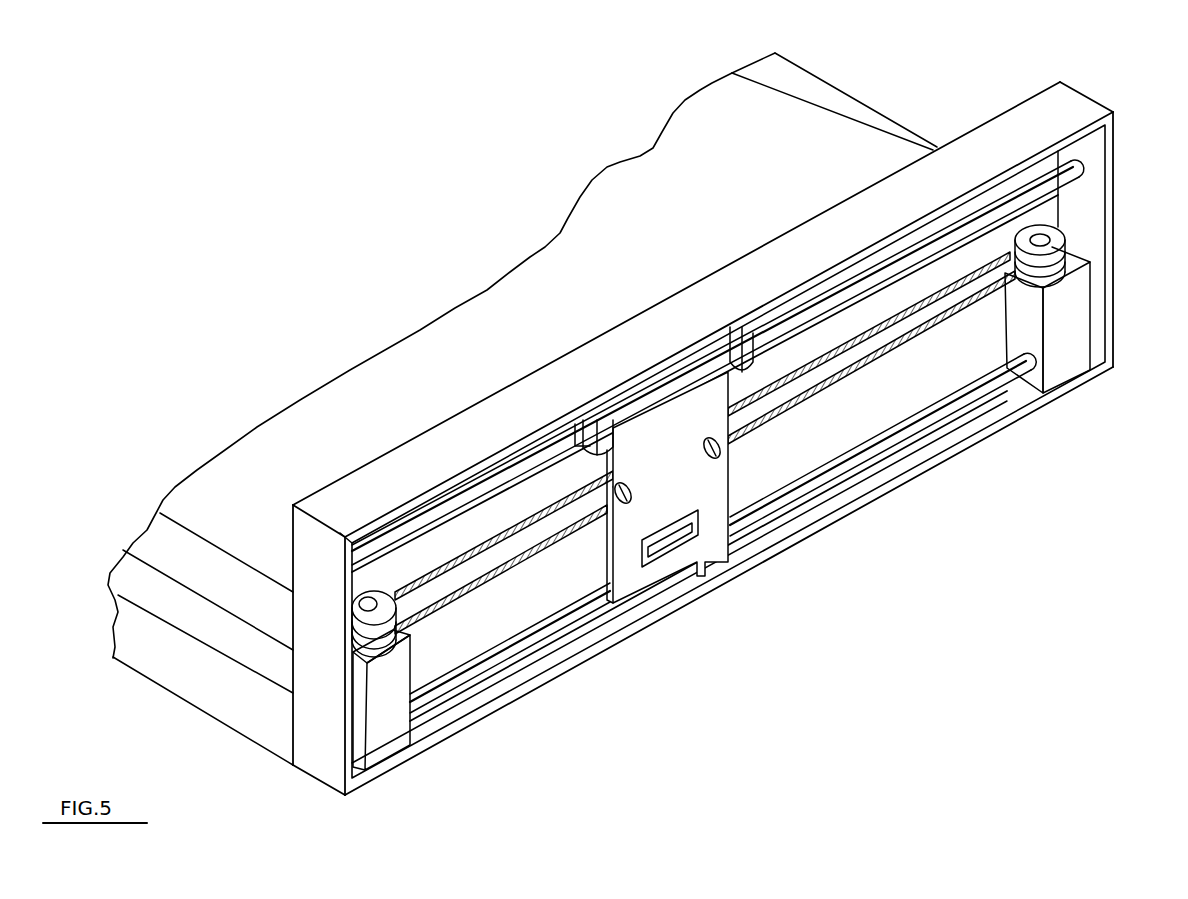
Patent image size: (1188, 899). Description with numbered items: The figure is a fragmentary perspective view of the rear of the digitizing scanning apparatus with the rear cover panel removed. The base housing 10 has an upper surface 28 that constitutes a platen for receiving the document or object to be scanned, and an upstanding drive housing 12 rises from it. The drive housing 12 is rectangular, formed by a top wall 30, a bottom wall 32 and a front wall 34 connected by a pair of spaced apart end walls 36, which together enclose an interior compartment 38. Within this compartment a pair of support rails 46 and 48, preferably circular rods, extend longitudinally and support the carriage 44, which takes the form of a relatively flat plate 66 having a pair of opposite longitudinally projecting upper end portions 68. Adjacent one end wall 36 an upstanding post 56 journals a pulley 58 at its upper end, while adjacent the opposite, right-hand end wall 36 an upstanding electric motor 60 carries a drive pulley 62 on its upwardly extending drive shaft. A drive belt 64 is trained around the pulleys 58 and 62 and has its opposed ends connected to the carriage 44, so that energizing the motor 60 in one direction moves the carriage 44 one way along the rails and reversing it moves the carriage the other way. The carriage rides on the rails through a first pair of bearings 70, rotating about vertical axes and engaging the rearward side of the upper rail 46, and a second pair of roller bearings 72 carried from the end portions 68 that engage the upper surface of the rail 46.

The base housing 10 is at (134, 661).
The drive housing 12 is at (1022, 106).
The upper surface 28 is at (420, 350).
The top wall 30 is at (862, 218).
The bottom wall 32 is at (950, 458).
The front wall 34 is at (783, 233).
The end walls 36 is at (312, 545).
The interior compartment 38 is at (483, 523).
The carriage 44 is at (643, 575).
The support rail 46 is at (957, 222).
The support rail 48 is at (942, 418).
The upstanding post 56 is at (392, 687).
The pulley 58 is at (353, 627).
The electric motor 60 is at (1080, 297).
The drive pulley 62 is at (1057, 237).
The drive belt 64 is at (820, 362).
The flat plate 66 is at (662, 383).
The upper end portions 68 is at (737, 330).
The bearings 70 is at (600, 450).
The roller bearings 72 is at (573, 433).